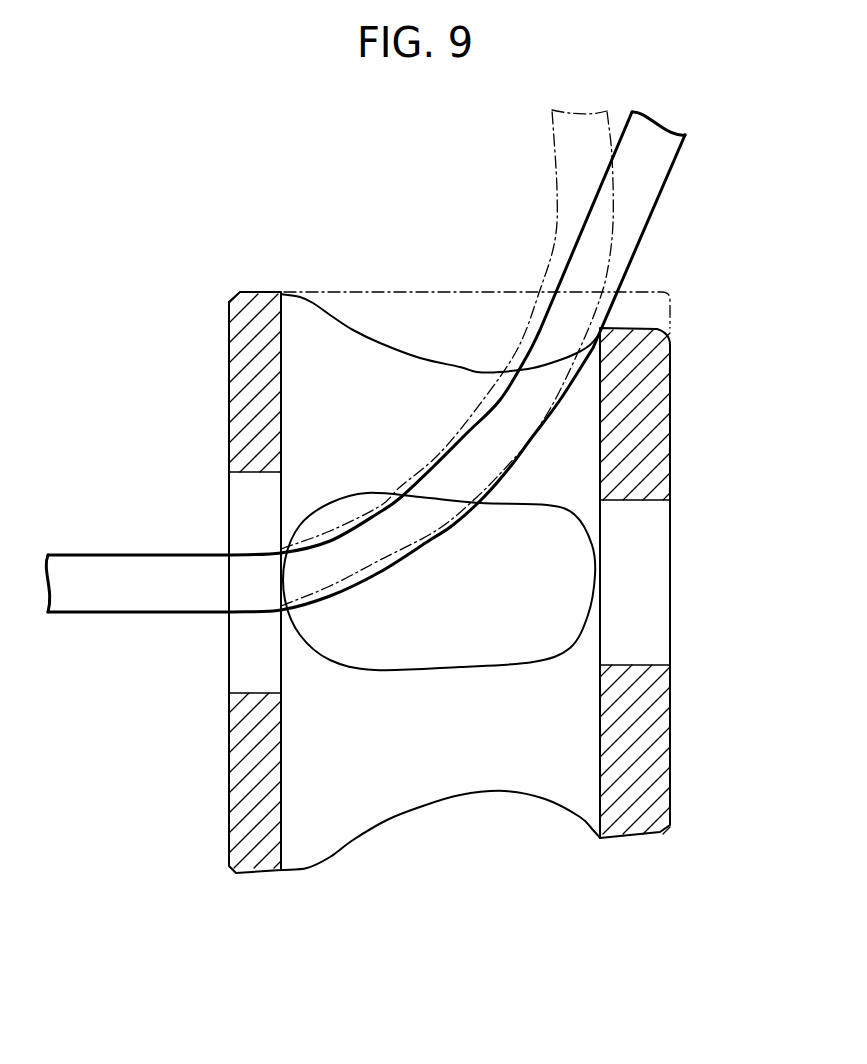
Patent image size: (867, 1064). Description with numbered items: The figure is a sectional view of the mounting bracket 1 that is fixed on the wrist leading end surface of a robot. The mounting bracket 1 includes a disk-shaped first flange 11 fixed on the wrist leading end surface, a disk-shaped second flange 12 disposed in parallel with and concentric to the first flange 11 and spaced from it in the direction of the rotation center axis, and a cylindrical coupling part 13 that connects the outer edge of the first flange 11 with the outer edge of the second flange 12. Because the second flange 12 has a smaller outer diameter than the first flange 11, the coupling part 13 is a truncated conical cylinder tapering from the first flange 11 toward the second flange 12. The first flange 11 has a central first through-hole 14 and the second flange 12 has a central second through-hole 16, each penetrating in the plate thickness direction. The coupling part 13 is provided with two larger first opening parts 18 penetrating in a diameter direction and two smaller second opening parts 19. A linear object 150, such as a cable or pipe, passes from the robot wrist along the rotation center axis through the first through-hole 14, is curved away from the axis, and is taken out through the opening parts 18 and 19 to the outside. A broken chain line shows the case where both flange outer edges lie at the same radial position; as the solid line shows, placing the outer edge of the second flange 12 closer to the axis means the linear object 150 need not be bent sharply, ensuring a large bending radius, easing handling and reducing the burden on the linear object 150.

The mounting bracket 1 is at (160, 228).
The first flange 11 is at (215, 438).
The second flange 12 is at (686, 523).
The coupling part 13 is at (333, 332).
The first through-hole 14 is at (248, 693).
The second through-hole 16 is at (647, 665).
The first opening part 18 is at (392, 350).
The second opening part 19 is at (408, 668).
The linear object 150 is at (90, 545).